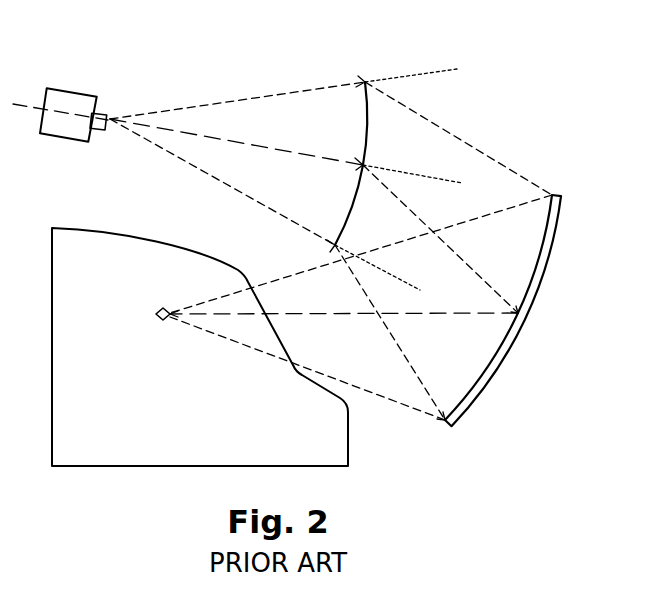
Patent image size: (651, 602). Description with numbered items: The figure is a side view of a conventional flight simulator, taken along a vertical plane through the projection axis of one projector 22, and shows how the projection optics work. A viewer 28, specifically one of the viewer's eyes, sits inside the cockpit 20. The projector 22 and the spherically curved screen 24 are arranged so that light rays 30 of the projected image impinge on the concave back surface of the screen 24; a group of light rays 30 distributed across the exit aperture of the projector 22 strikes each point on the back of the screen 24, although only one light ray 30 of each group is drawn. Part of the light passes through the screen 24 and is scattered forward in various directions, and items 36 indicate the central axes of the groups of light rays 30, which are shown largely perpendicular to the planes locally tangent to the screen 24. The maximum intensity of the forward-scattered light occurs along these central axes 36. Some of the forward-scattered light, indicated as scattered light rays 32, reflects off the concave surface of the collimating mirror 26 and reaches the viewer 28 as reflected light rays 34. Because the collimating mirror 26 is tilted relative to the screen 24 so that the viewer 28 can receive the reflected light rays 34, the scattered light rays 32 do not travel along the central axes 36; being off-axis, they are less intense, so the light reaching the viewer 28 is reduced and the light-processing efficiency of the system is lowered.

The cockpit 20 is at (68, 252).
The projector 22 is at (61, 98).
The spherically curved screen 24 is at (367, 113).
The collimating mirror 26 is at (535, 300).
The viewer 28 is at (157, 318).
The light rays 30 is at (250, 98).
The scattered light rays 32 is at (486, 155).
The reflected light rays 34 is at (487, 215).
The central axes 36 is at (397, 73).